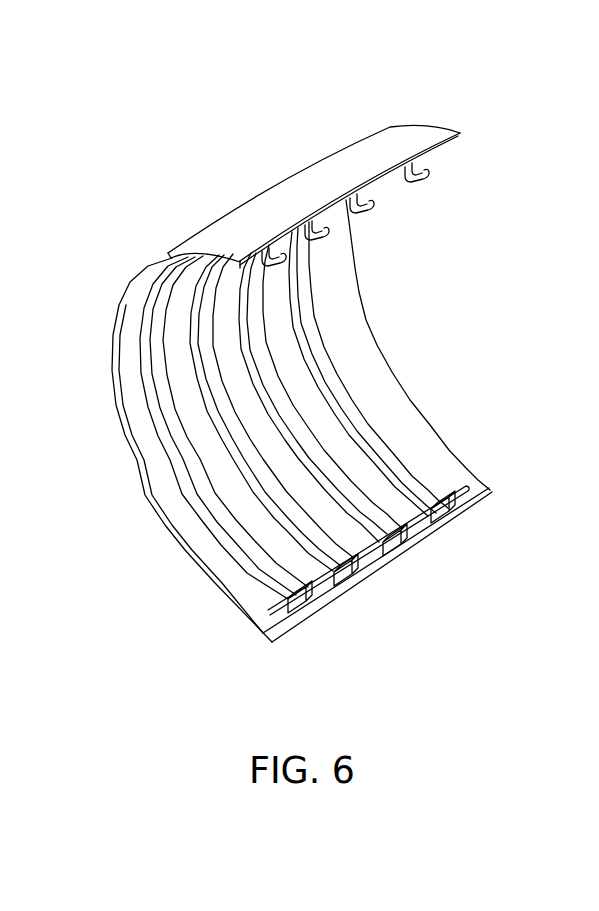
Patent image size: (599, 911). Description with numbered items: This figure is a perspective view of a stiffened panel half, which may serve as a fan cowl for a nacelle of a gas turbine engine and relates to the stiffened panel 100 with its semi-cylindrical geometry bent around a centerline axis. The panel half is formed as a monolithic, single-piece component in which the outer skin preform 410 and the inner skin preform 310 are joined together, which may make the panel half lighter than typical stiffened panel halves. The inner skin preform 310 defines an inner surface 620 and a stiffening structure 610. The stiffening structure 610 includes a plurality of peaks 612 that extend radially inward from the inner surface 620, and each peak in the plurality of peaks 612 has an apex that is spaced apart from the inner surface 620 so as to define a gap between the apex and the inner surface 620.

The stiffened panel outer skin 100 is at (331, 86).
The outer skin preform 410 is at (218, 232).
The inner surface 620 is at (428, 455).
The inner skin preform 310 is at (190, 483).
The stiffening structure 610 is at (314, 443).
The plurality of peaks 612 is at (282, 377).